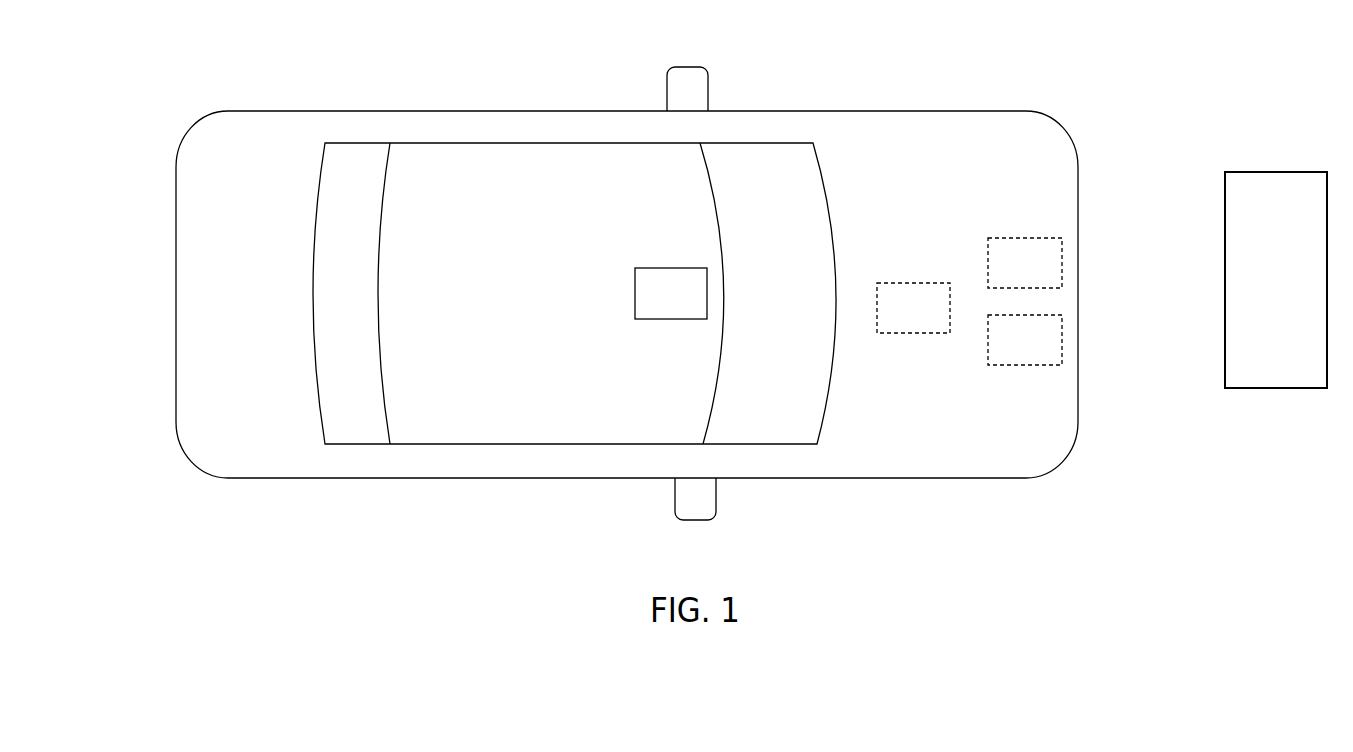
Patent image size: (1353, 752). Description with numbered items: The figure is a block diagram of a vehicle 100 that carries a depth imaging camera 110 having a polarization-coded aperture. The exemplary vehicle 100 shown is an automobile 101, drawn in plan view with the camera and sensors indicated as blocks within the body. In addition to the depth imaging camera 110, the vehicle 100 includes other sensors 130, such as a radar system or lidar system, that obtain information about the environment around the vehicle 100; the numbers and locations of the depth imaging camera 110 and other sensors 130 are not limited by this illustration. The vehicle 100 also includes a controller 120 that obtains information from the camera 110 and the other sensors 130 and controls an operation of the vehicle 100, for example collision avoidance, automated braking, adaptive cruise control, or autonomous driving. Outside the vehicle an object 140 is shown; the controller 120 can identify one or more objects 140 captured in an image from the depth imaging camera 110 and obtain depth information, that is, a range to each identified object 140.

The vehicle 100 is at (378, 111).
The automobile 101 is at (627, 283).
The depth imaging camera 110 is at (1025, 263).
The controller 120 is at (890, 323).
The other sensors 130 is at (648, 310).
The objects 140 is at (1252, 283).